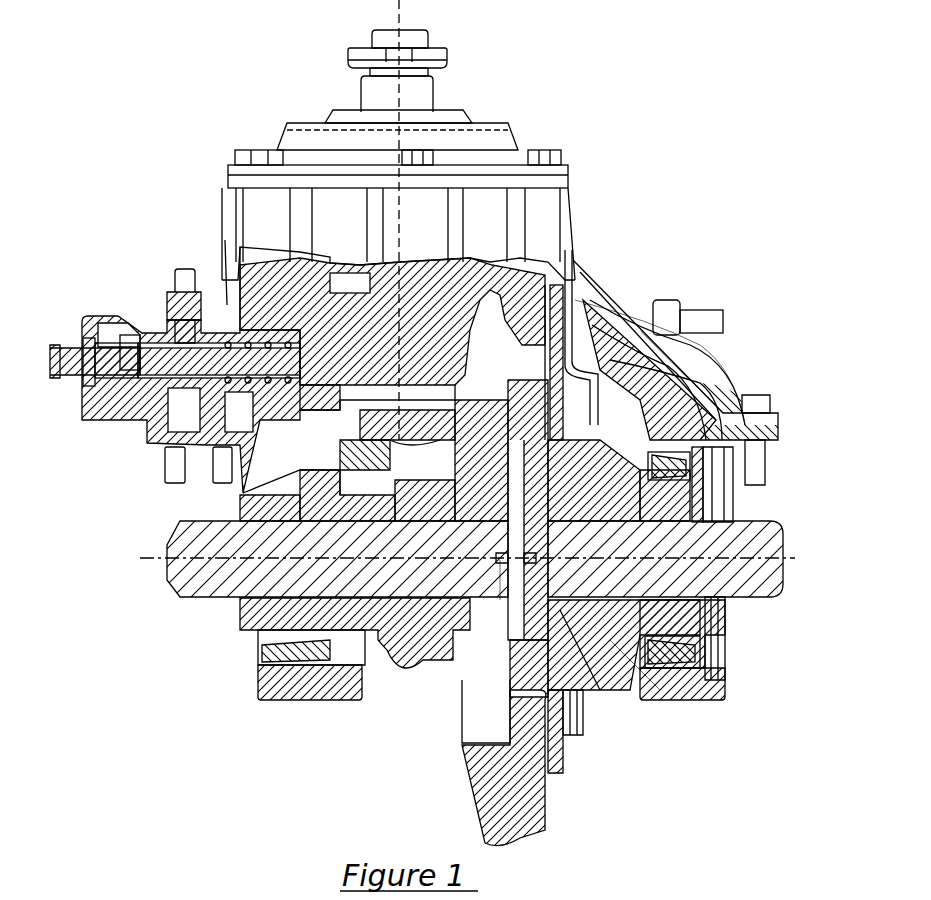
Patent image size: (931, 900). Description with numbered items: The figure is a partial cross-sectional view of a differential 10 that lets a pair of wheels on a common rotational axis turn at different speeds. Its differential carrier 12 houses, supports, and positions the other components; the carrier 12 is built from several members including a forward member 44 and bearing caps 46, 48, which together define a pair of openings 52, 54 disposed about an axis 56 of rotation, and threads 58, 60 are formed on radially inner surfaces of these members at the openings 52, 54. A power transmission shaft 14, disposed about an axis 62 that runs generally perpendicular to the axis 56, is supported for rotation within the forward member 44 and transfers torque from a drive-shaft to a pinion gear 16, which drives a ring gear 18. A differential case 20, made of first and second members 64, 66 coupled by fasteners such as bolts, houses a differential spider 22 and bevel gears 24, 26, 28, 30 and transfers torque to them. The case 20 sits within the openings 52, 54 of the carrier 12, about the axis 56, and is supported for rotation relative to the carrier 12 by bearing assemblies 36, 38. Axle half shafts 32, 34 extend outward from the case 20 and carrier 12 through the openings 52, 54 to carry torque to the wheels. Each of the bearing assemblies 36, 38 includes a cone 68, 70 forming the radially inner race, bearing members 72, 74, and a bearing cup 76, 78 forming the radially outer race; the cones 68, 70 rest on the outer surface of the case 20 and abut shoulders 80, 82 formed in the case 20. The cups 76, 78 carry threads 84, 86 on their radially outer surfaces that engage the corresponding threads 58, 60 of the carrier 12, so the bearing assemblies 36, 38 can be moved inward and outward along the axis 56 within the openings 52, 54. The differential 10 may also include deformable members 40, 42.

The differential 10 is at (705, 170).
The differential carrier 12 is at (580, 246).
The power transmission shaft 14 is at (430, 96).
The pinion gear 16 is at (409, 276).
The ring gear 18 is at (582, 272).
The differential case 20 is at (688, 343).
The differential spider 22 is at (563, 742).
The bevel gear 24 is at (576, 514).
The bevel gear 26 is at (498, 570).
The bevel gear 28 is at (470, 518).
The bevel gear 30 is at (568, 602).
The axle half shaft 32 is at (202, 586).
The axle half shaft 34 is at (758, 594).
The bearing assembly 36 is at (313, 684).
The bearing assembly 38 is at (676, 688).
The deformable member 40 is at (280, 651).
The deformable member 42 is at (691, 476).
The forward member 44 is at (560, 192).
The bearing cap 46 is at (282, 700).
The bearing cap 48 is at (719, 692).
The opening 52 is at (262, 668).
The opening 54 is at (713, 657).
The axis of rotation 56 is at (148, 556).
The threads 58 is at (240, 492).
The threads 60 is at (665, 366).
The axis of rotation 62 is at (401, 6).
The first member 64 is at (406, 668).
The second member 66 is at (604, 658).
The cone 68 is at (368, 509).
The cone 70 is at (670, 493).
The bearing members 72 is at (342, 513).
The bearing members 74 is at (697, 503).
The bearing cup 76 is at (294, 533).
The bearing cup 78 is at (628, 505).
The shoulder 80 is at (378, 534).
The shoulder 82 is at (610, 512).
The threads 84 is at (353, 400).
The threads 86 is at (699, 383).